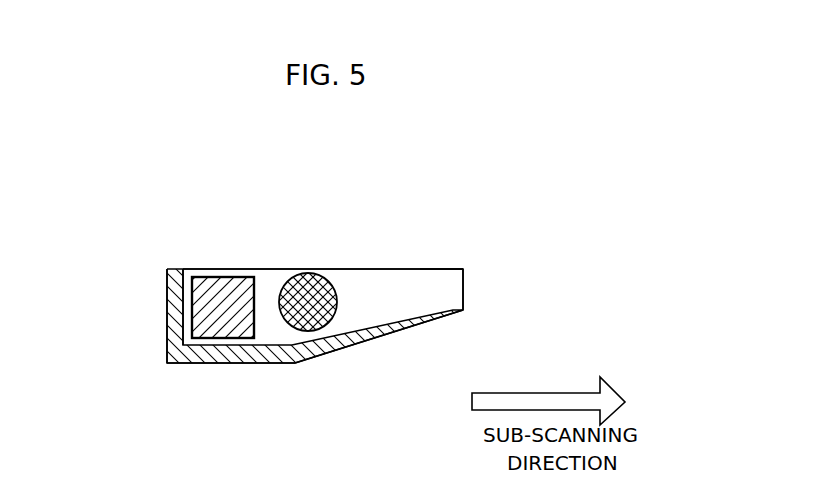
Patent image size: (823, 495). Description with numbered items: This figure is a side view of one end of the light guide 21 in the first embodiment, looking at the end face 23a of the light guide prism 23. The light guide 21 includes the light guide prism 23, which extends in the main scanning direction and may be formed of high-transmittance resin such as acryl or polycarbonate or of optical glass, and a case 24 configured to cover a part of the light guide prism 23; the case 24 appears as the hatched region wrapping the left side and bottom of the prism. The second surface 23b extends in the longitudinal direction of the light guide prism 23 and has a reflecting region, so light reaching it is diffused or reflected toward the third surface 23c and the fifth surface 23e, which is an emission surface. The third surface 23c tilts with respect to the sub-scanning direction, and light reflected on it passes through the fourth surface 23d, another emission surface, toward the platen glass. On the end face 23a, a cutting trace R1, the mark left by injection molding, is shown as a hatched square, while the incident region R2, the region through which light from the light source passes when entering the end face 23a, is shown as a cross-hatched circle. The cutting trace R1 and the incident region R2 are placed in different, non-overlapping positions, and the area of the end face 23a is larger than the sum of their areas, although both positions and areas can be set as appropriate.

The light guide 21 is at (166, 396).
The light guide prism 23 is at (359, 265).
The end face 23a is at (400, 290).
The second surface 23b is at (167, 327).
The third surface 23c is at (367, 342).
The fourth surface 23d is at (430, 266).
The fifth surface 23e is at (465, 298).
The case 24 is at (167, 284).
The cutting trace R1 is at (222, 303).
The incident region R2 is at (305, 300).